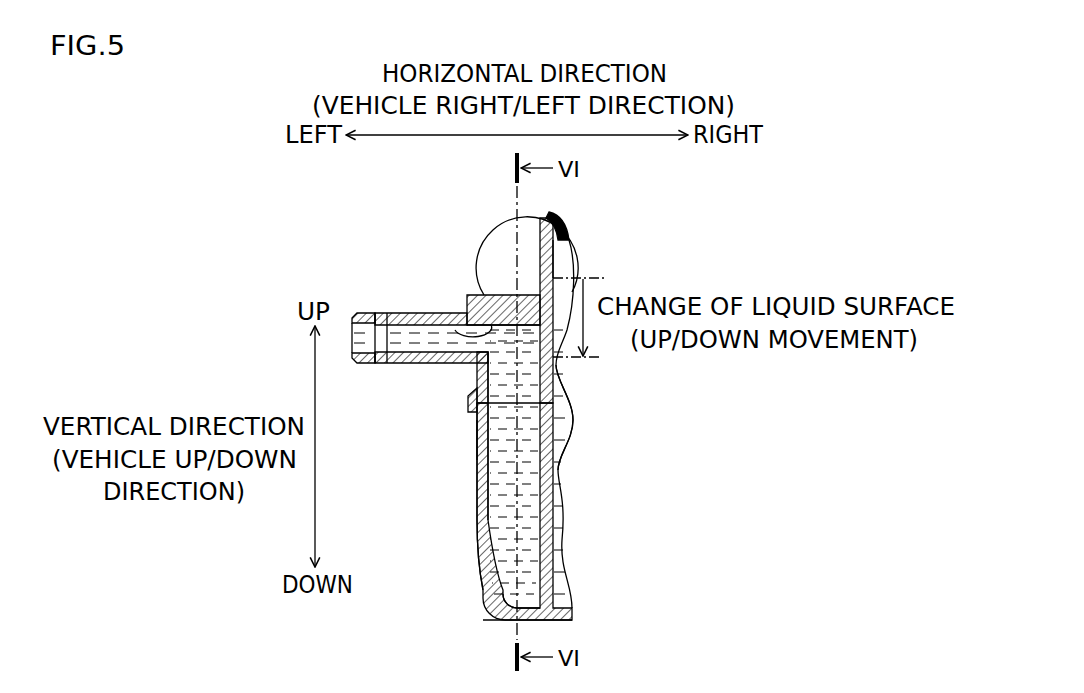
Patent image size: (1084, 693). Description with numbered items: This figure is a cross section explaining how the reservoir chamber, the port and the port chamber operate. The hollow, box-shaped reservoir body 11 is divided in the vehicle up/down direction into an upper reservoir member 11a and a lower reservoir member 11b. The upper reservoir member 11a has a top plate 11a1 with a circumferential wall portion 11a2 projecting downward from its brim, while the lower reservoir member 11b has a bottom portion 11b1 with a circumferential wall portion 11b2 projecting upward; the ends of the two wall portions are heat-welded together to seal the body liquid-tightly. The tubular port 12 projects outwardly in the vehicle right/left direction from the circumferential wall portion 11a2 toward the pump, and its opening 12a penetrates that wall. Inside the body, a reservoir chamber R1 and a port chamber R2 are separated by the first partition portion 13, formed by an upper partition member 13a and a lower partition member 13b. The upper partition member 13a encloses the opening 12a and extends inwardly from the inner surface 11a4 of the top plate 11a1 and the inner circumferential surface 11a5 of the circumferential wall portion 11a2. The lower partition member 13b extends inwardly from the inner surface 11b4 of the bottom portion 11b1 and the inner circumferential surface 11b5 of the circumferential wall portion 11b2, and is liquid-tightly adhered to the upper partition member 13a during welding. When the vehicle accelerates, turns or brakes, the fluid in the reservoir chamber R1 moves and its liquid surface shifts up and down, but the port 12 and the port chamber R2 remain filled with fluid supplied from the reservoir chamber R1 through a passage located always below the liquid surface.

The reservoir body 11 is at (482, 404).
The upper reservoir member 11a is at (465, 290).
The top plate 11a1 is at (488, 296).
The circumferential wall portion 11a2 is at (490, 380).
The inner surface 11a4 is at (502, 327).
The inner circumferential surface 11a5 is at (470, 397).
The lower reservoir member 11b is at (527, 491).
The bottom portion 11b1 is at (555, 622).
The circumferential wall portion 11b2 is at (477, 520).
The inner surface 11b4 is at (530, 607).
The inner circumferential surface 11b5 is at (490, 484).
The port 12 is at (446, 312).
The opening 12a is at (455, 330).
The first partition portion 13 is at (620, 424).
The upper partition member 13a is at (562, 392).
The lower partition member 13b is at (560, 468).
The reservoir chamber R1 is at (568, 248).
The port chamber R2 is at (477, 440).